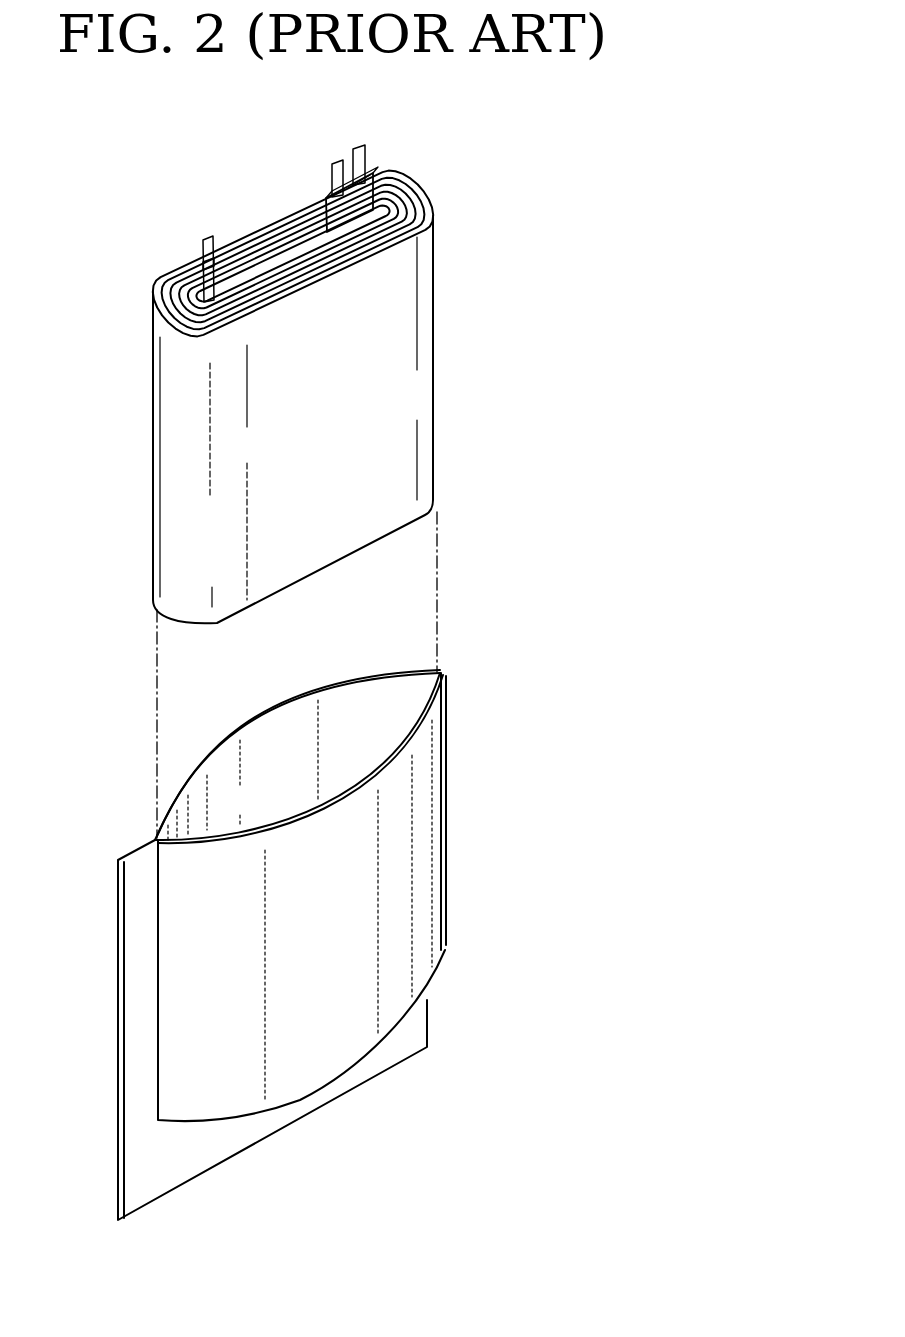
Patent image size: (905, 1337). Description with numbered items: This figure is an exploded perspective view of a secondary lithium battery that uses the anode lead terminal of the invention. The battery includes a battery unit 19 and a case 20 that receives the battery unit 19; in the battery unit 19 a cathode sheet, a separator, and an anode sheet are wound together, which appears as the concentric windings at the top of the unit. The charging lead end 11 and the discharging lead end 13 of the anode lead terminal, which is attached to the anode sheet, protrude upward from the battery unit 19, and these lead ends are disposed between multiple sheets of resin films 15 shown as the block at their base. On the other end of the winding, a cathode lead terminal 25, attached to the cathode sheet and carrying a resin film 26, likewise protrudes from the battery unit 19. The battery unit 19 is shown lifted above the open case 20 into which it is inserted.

The charging lead end 11 is at (362, 147).
The discharging lead end 13 is at (338, 162).
The resin films 15 is at (358, 193).
The battery unit 19 is at (432, 392).
The case 20 is at (435, 837).
The cathode lead terminal 25 is at (208, 240).
The resin film 26 is at (206, 264).